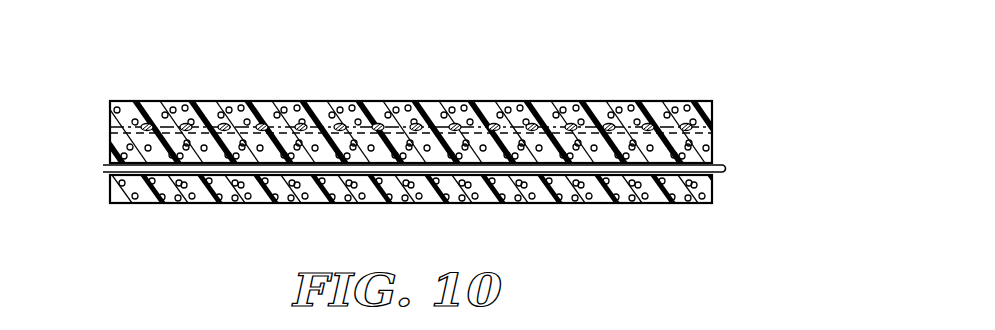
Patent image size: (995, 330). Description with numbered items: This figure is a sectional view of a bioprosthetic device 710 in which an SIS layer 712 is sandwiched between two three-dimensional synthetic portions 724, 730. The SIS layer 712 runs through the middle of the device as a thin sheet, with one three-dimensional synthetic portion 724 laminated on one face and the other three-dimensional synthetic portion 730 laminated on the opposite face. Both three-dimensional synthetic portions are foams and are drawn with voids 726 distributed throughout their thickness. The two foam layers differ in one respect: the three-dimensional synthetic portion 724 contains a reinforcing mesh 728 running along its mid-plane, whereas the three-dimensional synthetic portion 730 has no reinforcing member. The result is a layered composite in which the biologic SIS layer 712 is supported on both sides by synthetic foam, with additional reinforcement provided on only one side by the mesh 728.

The bioprosthetic device 710 is at (768, 101).
The SIS layer 712 is at (717, 170).
The three-dimensional synthetic portion 724 is at (418, 102).
The voids 726 is at (378, 110).
The reinforcing mesh 728 is at (227, 130).
The three-dimensional synthetic portion 730 is at (686, 204).